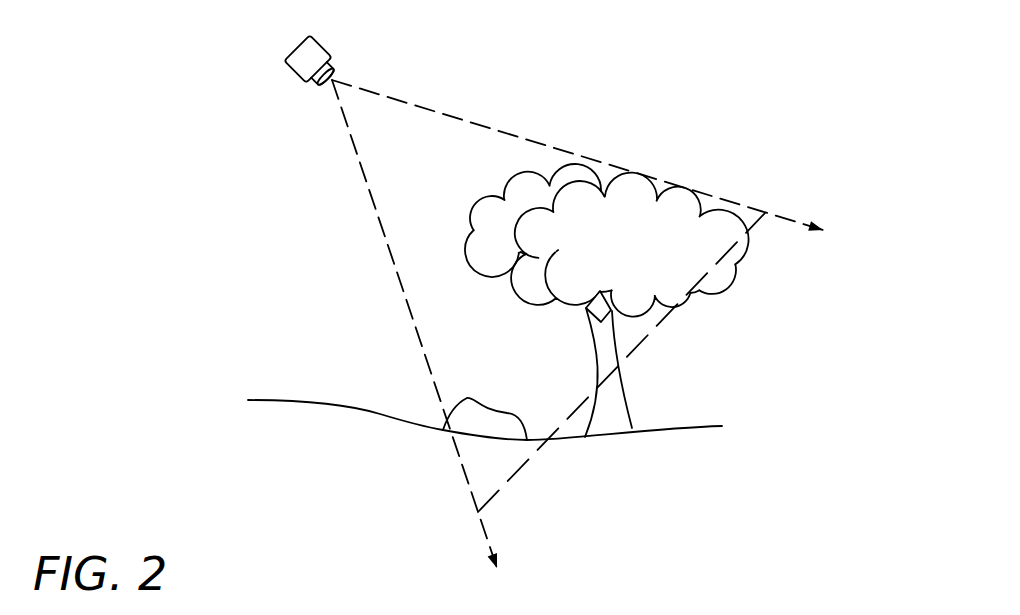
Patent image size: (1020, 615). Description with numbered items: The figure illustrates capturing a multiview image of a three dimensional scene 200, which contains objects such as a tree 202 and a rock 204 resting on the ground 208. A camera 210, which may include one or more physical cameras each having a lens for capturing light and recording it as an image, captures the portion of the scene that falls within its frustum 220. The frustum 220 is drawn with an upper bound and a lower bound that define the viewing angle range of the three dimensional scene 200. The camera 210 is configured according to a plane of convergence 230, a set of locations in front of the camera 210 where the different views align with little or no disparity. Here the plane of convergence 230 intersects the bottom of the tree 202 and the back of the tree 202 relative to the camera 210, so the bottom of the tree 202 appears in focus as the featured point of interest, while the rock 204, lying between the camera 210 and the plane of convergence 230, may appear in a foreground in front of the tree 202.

The 3D scene 200 is at (742, 77).
The tree 202 is at (672, 205).
The rock 204 is at (457, 410).
The ground 208 is at (693, 425).
The camera 210 is at (318, 50).
The frustum 220 is at (505, 123).
The plane of convergence 230 is at (577, 392).